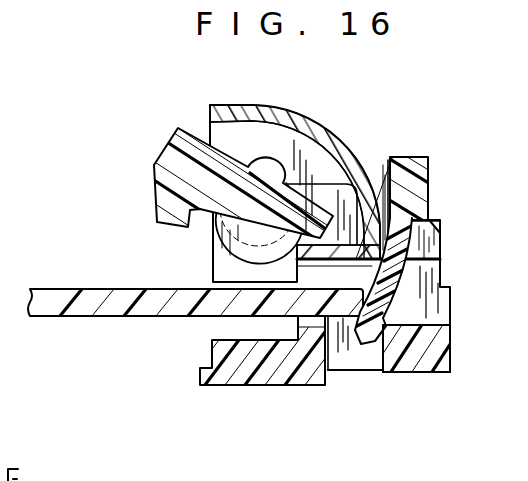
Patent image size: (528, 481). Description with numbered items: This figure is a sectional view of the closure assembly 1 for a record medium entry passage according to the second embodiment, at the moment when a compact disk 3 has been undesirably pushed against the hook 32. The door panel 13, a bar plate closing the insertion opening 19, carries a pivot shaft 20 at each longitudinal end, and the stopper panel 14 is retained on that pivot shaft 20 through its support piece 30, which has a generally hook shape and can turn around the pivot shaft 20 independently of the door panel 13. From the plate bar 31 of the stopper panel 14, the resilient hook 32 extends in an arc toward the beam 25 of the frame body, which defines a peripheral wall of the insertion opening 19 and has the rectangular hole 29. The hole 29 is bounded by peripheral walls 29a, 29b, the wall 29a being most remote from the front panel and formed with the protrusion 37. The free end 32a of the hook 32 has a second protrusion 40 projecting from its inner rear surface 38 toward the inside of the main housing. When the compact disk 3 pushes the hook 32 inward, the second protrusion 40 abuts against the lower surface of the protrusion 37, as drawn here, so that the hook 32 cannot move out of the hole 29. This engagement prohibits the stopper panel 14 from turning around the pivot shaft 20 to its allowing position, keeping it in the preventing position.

The closure assembly 1 is at (421, 118).
The compact disk 3 is at (80, 306).
The door panel 13 is at (195, 128).
The stopper panel 14 is at (413, 157).
The insertion opening 19 is at (422, 305).
The pivot shaft 20 is at (262, 172).
The beam 25 is at (283, 338).
The hole 29 is at (371, 352).
The peripheral wall 29a is at (400, 372).
The peripheral wall 29b is at (330, 374).
The support piece 30 is at (333, 198).
The plate bar 31 is at (429, 172).
The hook 32 is at (403, 278).
The free end 32a is at (365, 347).
The protrusion 37 is at (389, 324).
The surface 38 is at (407, 267).
The second protrusion 40 is at (389, 346).